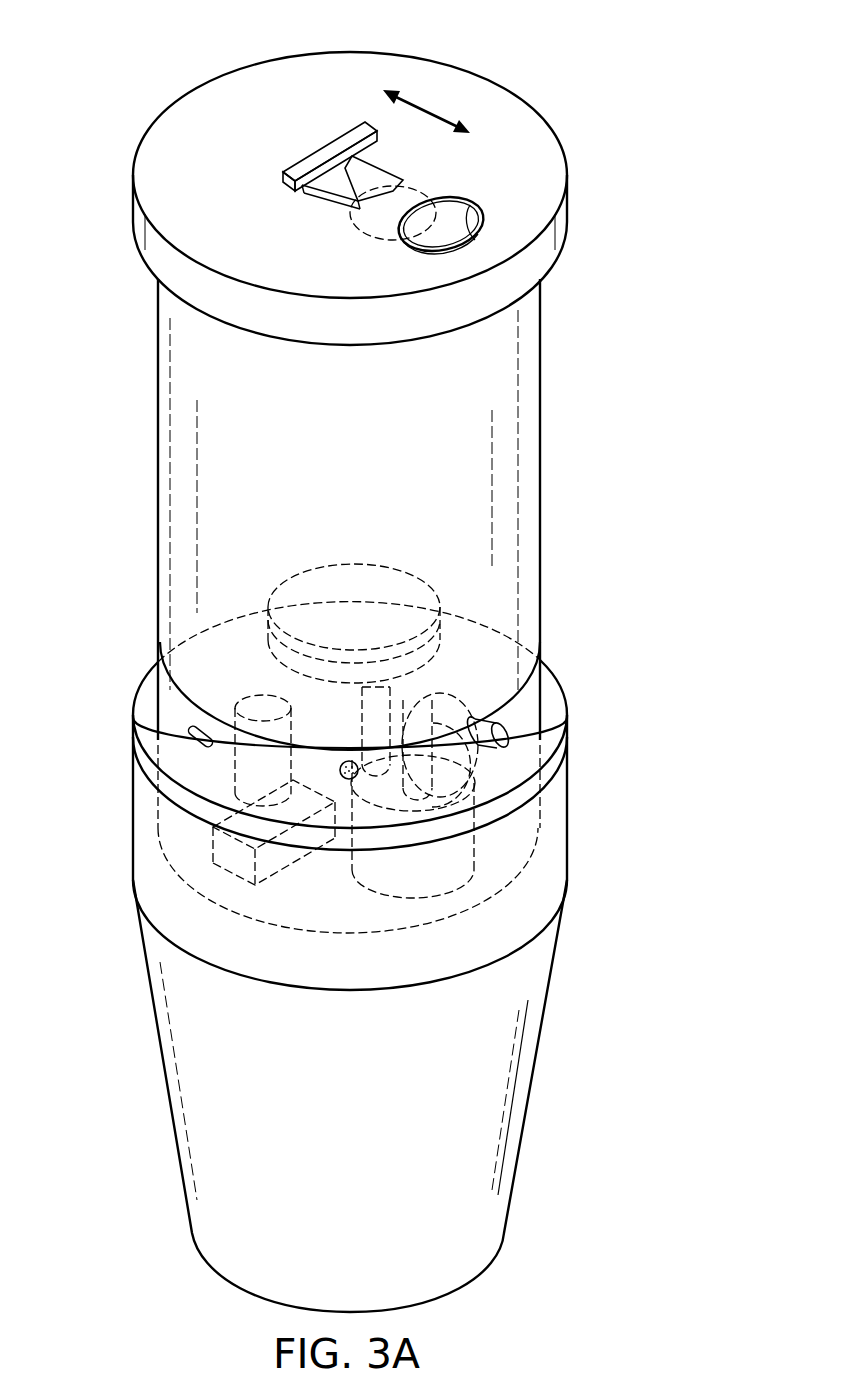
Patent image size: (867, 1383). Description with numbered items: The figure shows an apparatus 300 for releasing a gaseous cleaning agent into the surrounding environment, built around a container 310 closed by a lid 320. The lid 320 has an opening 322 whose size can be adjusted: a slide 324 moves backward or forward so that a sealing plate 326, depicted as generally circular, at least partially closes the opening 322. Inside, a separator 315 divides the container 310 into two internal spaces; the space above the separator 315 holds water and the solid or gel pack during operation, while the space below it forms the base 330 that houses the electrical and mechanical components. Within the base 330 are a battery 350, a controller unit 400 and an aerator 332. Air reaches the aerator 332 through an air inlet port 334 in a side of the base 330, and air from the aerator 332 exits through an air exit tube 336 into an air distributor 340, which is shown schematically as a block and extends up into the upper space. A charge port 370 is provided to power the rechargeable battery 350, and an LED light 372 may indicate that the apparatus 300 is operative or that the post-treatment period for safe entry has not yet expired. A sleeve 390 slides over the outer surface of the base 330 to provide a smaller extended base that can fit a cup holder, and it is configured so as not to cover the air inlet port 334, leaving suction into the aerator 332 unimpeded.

The apparatus 300 is at (174, 50).
The lid 320 is at (514, 76).
The opening 322 is at (478, 222).
The slide 324 is at (330, 152).
The sealing plate 326 is at (371, 246).
The container 310 is at (561, 453).
The separator 315 is at (453, 630).
The base 330 is at (143, 704).
The aerator 332 is at (474, 843).
The air inlet port 334 is at (508, 733).
The air exit tube 336 is at (408, 700).
The air distributor 340 is at (408, 577).
The battery 350 is at (262, 700).
The charge port 370 is at (188, 735).
The LED light 372 is at (341, 769).
The sleeve 390 is at (150, 1057).
The controller unit 400 is at (287, 868).